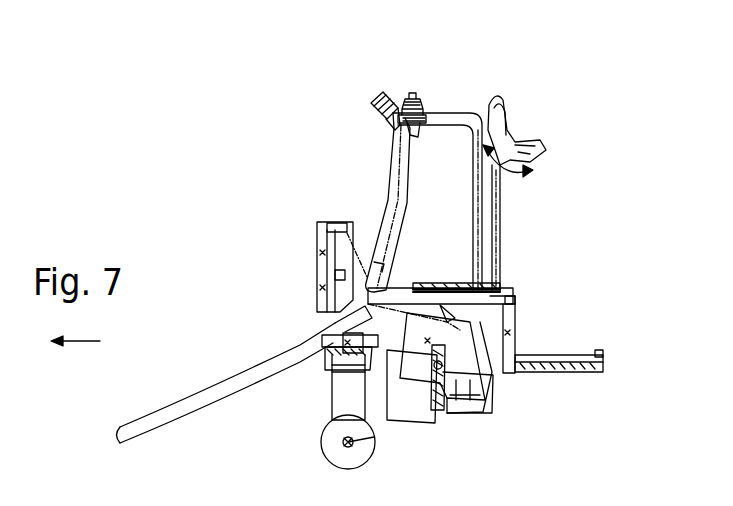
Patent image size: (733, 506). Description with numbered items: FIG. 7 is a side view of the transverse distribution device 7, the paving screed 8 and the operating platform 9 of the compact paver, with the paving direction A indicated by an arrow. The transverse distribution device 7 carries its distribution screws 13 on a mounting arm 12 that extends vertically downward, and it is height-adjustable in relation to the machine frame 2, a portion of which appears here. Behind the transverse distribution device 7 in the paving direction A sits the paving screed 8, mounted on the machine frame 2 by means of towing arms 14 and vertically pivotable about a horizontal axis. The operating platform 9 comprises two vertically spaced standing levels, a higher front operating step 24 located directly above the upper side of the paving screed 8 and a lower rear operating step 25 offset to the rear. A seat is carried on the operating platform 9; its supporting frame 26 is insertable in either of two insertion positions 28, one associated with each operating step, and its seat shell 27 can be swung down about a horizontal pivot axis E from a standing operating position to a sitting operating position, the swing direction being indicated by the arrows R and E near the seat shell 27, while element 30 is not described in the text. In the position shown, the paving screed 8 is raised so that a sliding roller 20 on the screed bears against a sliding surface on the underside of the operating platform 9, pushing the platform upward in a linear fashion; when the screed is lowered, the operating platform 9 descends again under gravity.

The machine frame 2 is at (327, 230).
The transverse distribution device 7 is at (340, 388).
The paving screed 8 is at (477, 383).
The operating platform 9 is at (503, 237).
The mounting arm 12 is at (333, 407).
The distribution screws 13 is at (363, 448).
The towing arms 14 is at (253, 362).
The sliding roller 20 is at (493, 290).
The front operating step 24 is at (433, 283).
The rear operating step 25 is at (603, 368).
The frame 26 is at (497, 263).
The seat shell 27 is at (502, 132).
The insertion positions 28 is at (497, 292).
The clamp 30 is at (390, 117).
The rotation direction R is at (505, 147).
The pivot axis E is at (505, 160).
The paving direction A is at (63, 341).